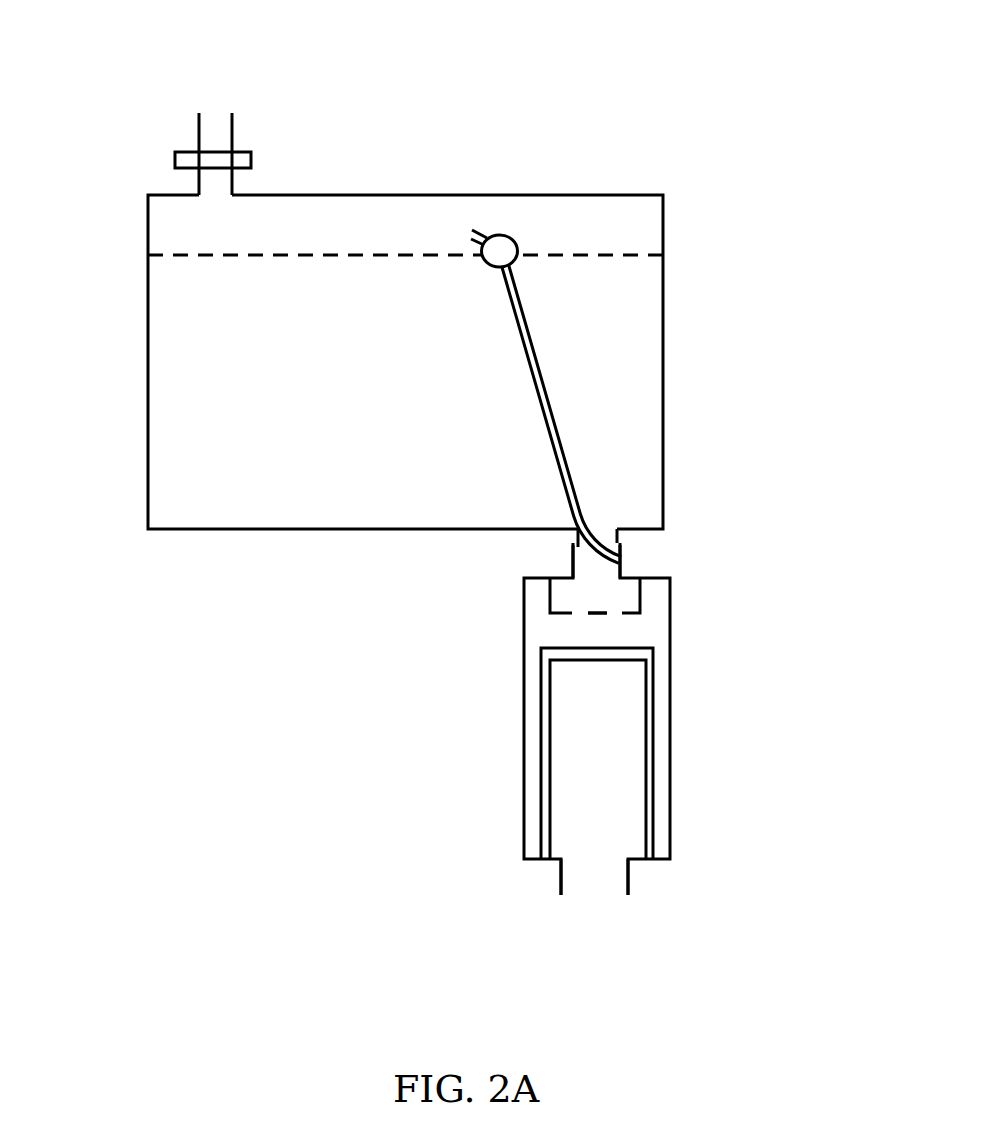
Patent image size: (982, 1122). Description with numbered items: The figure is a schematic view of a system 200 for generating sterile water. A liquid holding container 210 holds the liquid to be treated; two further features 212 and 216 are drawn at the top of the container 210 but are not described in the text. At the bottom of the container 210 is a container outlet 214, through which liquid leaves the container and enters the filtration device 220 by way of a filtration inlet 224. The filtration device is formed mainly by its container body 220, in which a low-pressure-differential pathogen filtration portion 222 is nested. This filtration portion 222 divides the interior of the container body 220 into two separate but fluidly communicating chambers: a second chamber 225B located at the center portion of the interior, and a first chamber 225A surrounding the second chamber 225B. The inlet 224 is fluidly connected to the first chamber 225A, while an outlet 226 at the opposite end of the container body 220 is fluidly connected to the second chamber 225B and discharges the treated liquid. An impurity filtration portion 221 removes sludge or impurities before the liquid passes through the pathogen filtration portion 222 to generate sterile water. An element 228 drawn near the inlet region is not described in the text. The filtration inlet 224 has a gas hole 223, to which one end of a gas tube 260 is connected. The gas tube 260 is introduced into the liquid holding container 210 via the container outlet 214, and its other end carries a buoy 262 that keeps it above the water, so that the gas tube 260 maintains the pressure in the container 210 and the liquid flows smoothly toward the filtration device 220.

The system for generating sterile water 200 is at (92, 27).
The liquid holding container 210 is at (663, 277).
The inlet pipe 212 is at (232, 137).
The flange 216 is at (251, 158).
The container outlet 214 is at (617, 535).
The gas tube 260 is at (523, 342).
The buoy 262 is at (515, 237).
The filtration device 220 is at (524, 690).
The filtration inlet 224 is at (573, 560).
The gas hole 223 is at (623, 560).
The chamber opening 228 is at (600, 617).
The first chamber 225A is at (651, 620).
The low-pressure-differential pathogen filtration portion 222 is at (550, 775).
The impurity filtration portion 221 is at (655, 762).
The outlet 226 is at (561, 882).
The second chamber 225B is at (619, 817).